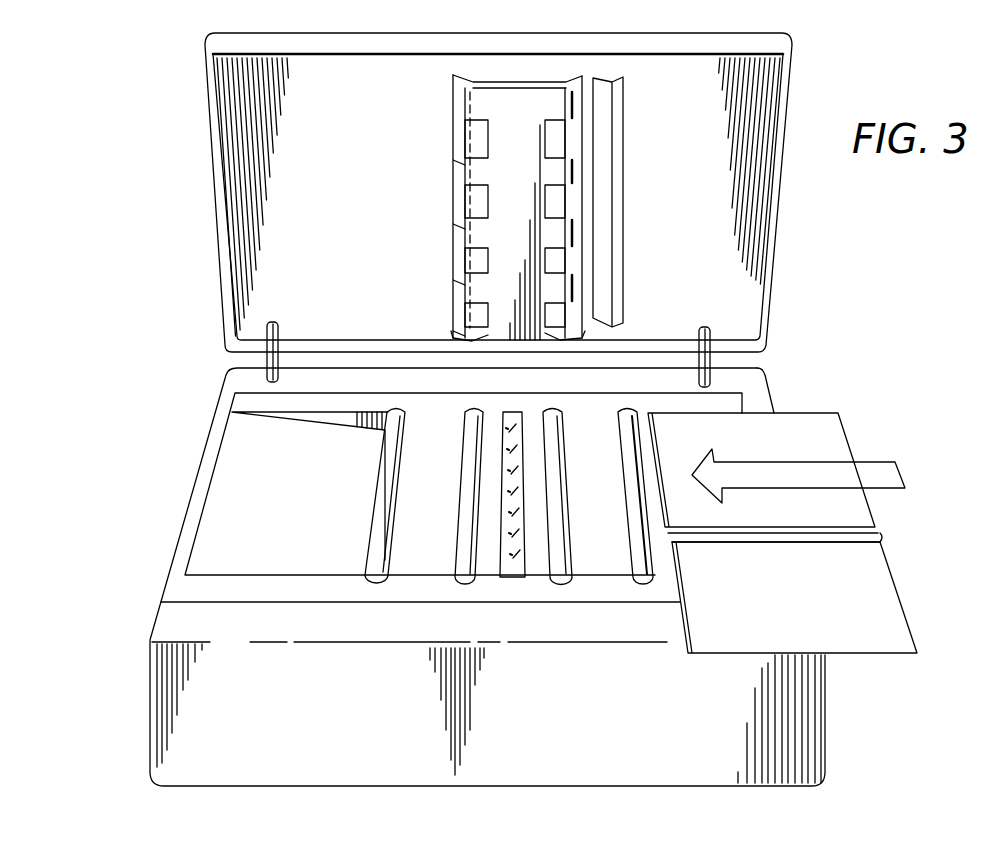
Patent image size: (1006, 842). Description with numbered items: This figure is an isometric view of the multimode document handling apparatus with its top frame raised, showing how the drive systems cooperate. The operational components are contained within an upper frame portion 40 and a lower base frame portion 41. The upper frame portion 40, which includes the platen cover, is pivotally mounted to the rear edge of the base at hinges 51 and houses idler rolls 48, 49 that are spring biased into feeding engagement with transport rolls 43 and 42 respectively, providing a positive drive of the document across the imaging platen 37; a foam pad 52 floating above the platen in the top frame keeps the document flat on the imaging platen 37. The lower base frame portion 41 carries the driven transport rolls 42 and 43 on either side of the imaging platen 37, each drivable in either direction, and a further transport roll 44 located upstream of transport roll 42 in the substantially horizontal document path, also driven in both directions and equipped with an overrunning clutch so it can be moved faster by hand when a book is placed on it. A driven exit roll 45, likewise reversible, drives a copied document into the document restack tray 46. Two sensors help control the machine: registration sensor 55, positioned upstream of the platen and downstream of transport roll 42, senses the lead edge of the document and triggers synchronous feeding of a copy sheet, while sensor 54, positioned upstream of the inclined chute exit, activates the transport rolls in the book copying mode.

The imaging platen 37 is at (515, 579).
The upper frame portion 40 is at (770, 261).
The lower base frame portion 41 is at (182, 672).
The driven transport roll 42 is at (560, 580).
The driven transport roll 43 is at (463, 578).
The transport roll 44 is at (634, 461).
The driven exit roll 45 is at (377, 578).
The document restack tray 46 is at (238, 502).
The idler roll 48 is at (473, 260).
The idler roll 49 is at (560, 267).
The hinges 51 is at (265, 363).
The foam pad 52 is at (523, 110).
The sensor 54 is at (592, 492).
The registration sensor 55 is at (533, 472).